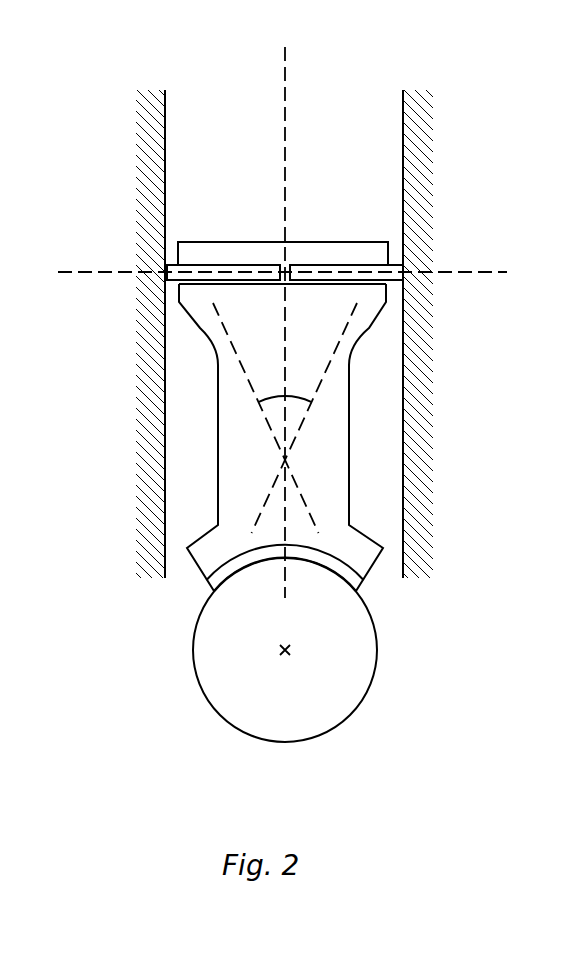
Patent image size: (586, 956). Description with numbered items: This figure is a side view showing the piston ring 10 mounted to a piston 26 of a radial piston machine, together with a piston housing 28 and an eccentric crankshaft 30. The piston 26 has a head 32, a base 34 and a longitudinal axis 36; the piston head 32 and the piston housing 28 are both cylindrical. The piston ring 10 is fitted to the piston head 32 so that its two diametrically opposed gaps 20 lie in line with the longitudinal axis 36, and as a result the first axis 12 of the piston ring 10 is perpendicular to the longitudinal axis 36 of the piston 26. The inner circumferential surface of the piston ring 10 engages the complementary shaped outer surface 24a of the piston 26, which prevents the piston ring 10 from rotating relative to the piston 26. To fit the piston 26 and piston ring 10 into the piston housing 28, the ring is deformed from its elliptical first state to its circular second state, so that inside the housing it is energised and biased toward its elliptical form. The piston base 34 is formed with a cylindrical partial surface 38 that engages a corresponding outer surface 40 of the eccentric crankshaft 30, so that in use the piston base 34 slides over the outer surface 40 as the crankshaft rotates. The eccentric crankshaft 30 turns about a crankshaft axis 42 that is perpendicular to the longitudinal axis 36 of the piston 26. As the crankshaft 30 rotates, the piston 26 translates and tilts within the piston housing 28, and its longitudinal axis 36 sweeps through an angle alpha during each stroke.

The piston ring 10 is at (397, 267).
The first axis 12 is at (483, 268).
The gaps 20 is at (290, 265).
The outer surface 24a is at (228, 265).
The piston 26 is at (332, 418).
The piston housing 28 is at (418, 157).
The eccentric crankshaft 30 is at (217, 664).
The head 32 is at (187, 252).
The base 34 is at (208, 542).
The longitudinal axis 36 is at (285, 75).
The cylindrical partial surface 38 is at (340, 578).
The outer surface 40 is at (357, 705).
The crankshaft axis 42 is at (285, 697).